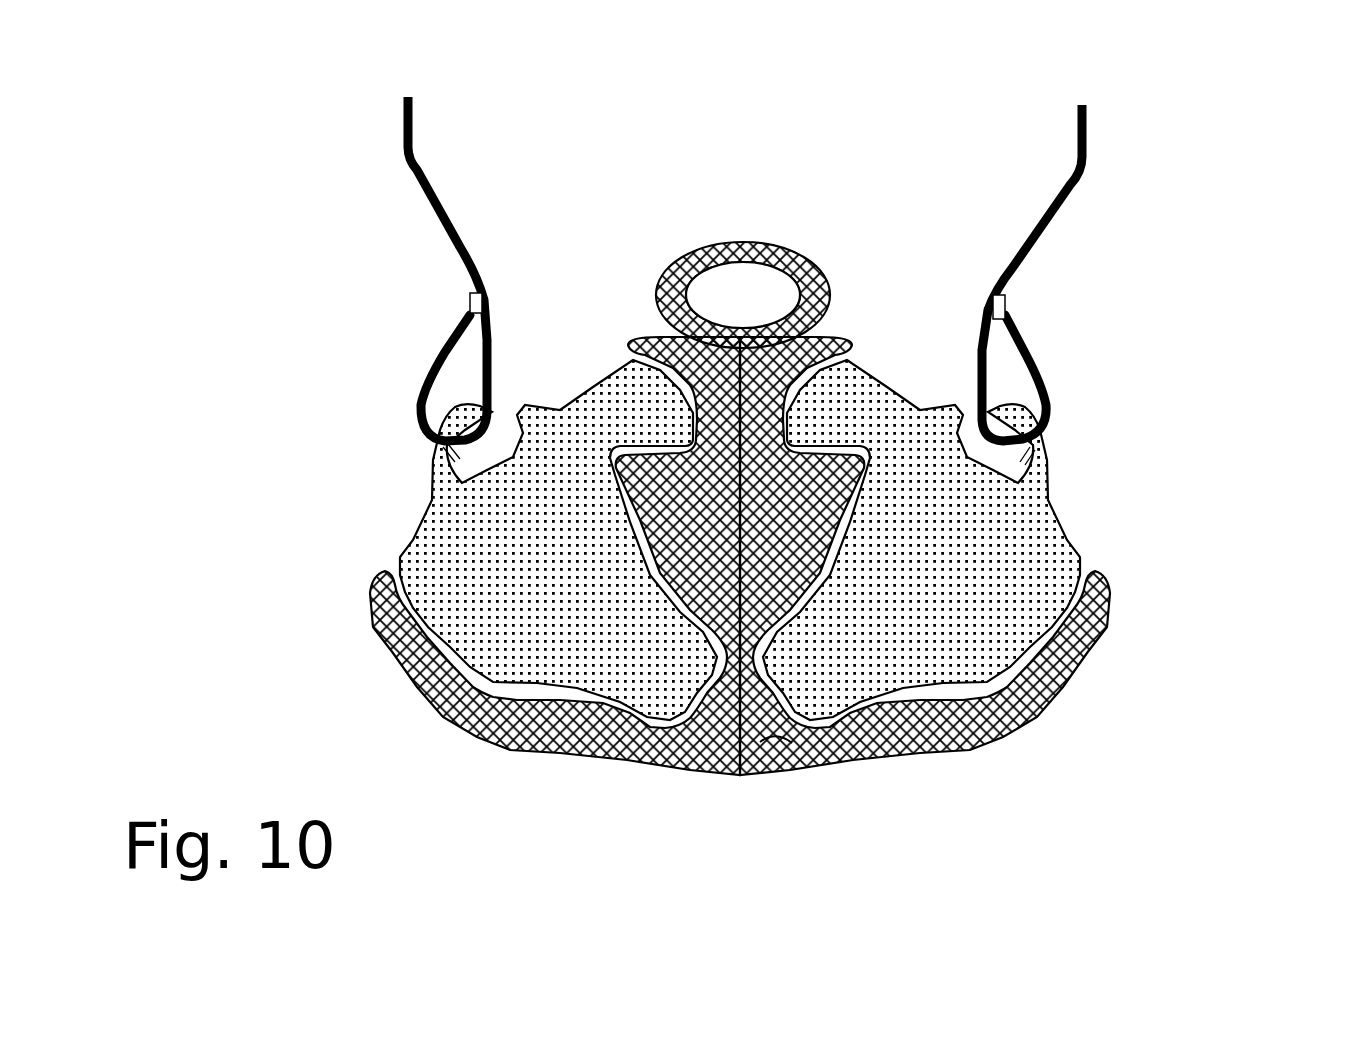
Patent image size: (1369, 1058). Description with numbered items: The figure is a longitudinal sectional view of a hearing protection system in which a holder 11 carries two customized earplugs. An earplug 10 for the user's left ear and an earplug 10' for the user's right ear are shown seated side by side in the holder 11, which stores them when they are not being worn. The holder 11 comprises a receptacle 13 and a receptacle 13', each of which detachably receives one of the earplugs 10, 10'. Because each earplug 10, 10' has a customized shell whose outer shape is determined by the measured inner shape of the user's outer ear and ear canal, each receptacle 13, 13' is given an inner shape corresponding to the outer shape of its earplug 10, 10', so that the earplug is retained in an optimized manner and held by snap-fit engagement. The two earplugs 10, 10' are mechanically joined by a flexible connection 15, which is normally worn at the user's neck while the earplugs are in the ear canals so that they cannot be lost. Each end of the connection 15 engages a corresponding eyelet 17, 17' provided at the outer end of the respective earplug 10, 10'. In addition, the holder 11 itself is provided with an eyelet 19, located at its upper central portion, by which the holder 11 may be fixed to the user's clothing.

The earplug 10 is at (415, 540).
The earplug 10' is at (1051, 540).
The holder 11 is at (800, 770).
The receptacle 13 is at (408, 556).
The receptacle 13' is at (1029, 556).
The flexible connection 15 is at (433, 205).
The eyelet 17 is at (340, 377).
The eyelet 17' is at (1128, 380).
The eyelet 19 is at (750, 280).